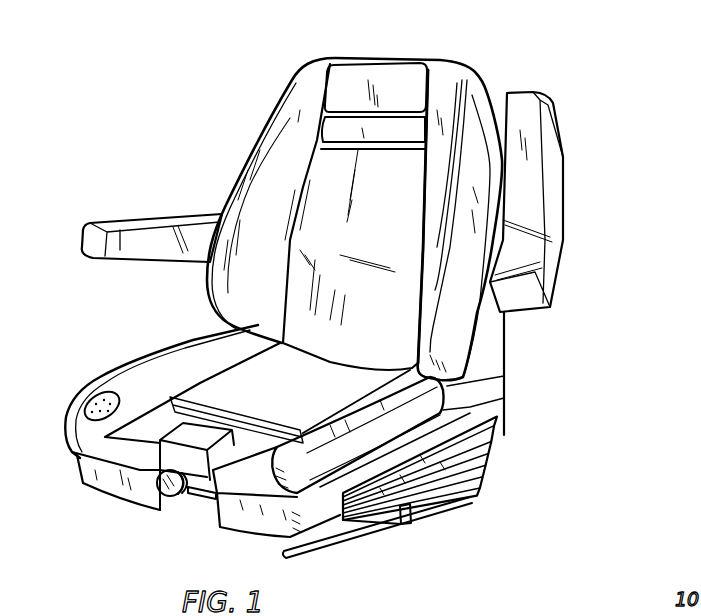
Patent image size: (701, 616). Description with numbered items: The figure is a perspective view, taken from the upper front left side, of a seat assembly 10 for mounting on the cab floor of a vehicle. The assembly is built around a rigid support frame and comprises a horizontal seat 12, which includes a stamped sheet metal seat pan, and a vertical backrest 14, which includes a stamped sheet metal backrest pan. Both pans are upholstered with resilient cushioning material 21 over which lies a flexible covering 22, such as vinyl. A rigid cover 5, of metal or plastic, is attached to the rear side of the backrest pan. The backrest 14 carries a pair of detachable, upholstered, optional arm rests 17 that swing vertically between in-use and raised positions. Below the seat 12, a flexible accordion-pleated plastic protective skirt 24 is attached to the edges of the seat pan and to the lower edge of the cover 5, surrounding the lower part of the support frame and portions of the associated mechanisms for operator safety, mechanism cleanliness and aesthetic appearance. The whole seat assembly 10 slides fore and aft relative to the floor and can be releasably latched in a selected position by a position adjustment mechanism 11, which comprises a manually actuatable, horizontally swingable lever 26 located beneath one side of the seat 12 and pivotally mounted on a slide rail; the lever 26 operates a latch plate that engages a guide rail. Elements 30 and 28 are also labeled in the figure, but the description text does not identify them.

The seat assembly 10 is at (509, 60).
The backrest 14 is at (323, 165).
The arm rests 17 is at (128, 222).
The rigid cover 5 is at (507, 337).
The flexible covering 22 is at (167, 360).
The resilient cushioning material 21 is at (107, 403).
The horizontal seat 12 is at (138, 377).
The adjusting knob 30 is at (163, 484).
The bracket 28 is at (200, 497).
The protective skirt 24 is at (500, 428).
The lever 26 is at (305, 549).
The position adjustment mechanism 11 is at (407, 522).